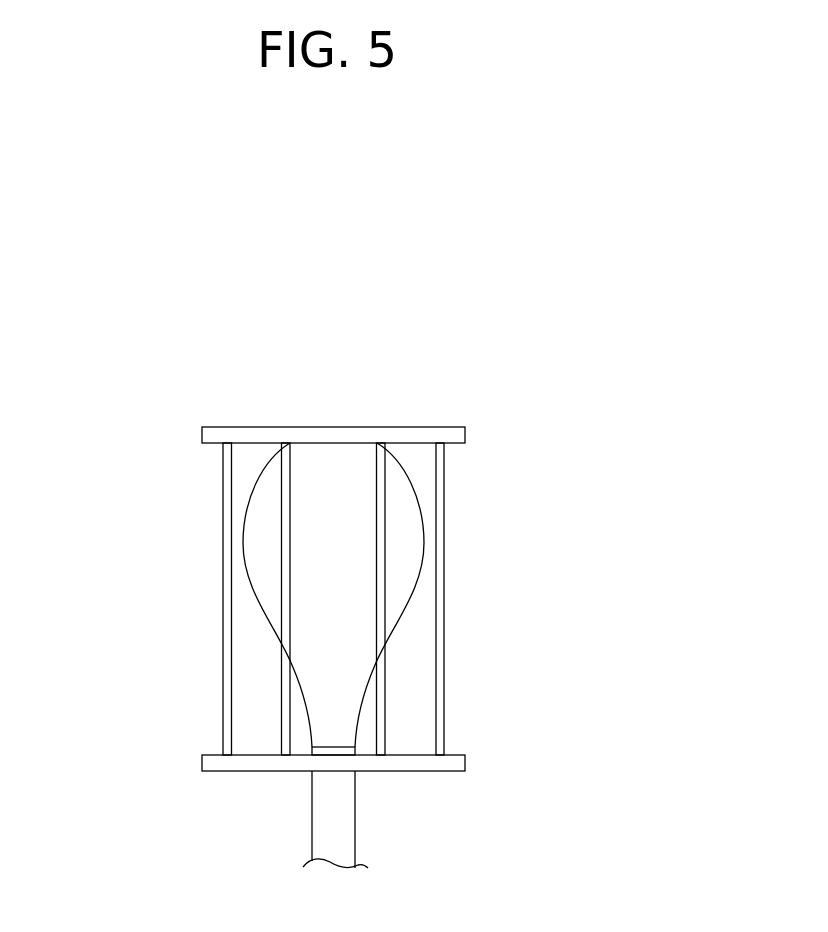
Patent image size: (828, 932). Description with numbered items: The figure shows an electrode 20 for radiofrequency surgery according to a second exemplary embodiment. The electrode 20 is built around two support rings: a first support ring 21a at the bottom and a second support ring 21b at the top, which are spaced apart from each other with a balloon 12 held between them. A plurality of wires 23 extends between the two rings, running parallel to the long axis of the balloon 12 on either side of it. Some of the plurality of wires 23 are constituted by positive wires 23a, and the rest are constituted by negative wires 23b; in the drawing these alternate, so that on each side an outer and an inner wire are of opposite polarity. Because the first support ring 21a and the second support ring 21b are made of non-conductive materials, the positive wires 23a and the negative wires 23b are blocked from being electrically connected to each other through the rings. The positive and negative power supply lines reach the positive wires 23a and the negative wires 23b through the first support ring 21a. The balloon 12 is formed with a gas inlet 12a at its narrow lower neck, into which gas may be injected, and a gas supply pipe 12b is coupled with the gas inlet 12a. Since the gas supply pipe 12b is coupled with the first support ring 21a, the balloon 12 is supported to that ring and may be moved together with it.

The balloon 12 is at (267, 488).
The gas inlet 12a is at (333, 747).
The gas supply pipe 12b is at (337, 822).
The electrode for radiofrequency surgery 20 is at (365, 533).
The first support ring 21a is at (466, 775).
The second support ring 21b is at (466, 433).
The wires 23 is at (327, 599).
The positive wires 23a is at (222, 606).
The negative wires 23b is at (287, 675).